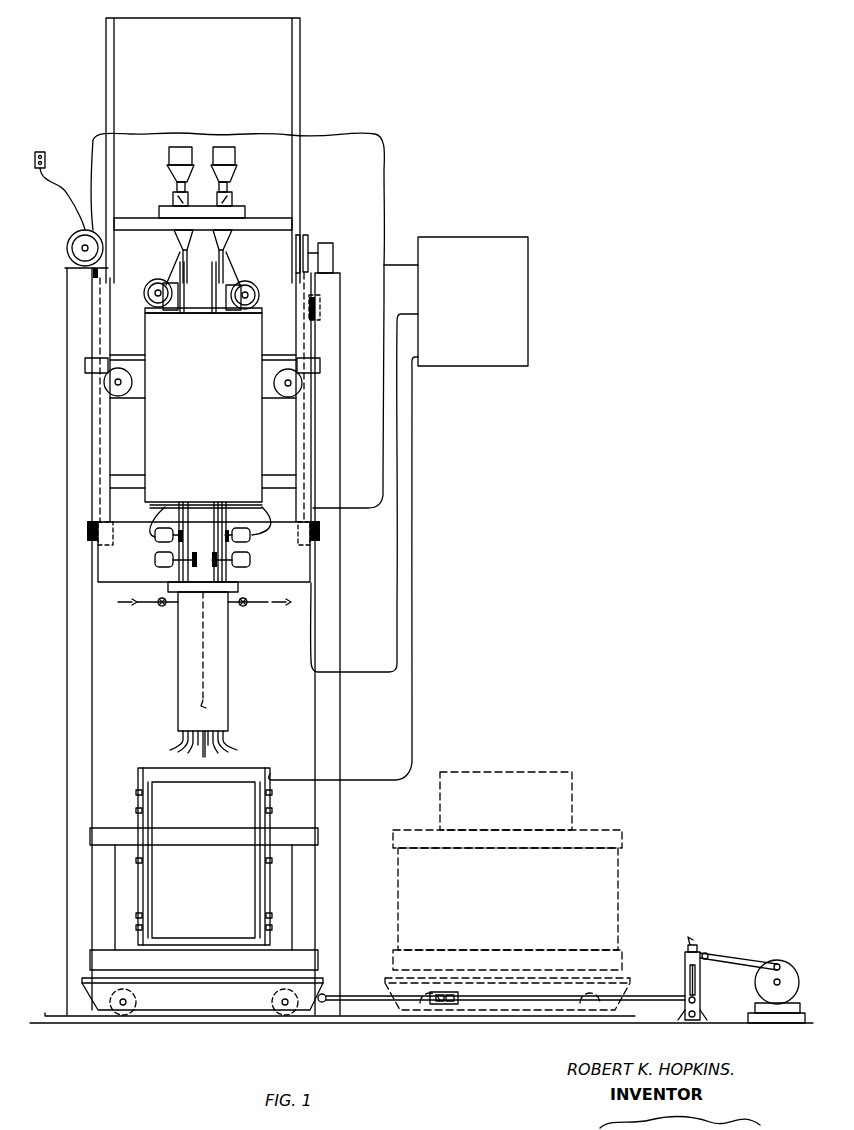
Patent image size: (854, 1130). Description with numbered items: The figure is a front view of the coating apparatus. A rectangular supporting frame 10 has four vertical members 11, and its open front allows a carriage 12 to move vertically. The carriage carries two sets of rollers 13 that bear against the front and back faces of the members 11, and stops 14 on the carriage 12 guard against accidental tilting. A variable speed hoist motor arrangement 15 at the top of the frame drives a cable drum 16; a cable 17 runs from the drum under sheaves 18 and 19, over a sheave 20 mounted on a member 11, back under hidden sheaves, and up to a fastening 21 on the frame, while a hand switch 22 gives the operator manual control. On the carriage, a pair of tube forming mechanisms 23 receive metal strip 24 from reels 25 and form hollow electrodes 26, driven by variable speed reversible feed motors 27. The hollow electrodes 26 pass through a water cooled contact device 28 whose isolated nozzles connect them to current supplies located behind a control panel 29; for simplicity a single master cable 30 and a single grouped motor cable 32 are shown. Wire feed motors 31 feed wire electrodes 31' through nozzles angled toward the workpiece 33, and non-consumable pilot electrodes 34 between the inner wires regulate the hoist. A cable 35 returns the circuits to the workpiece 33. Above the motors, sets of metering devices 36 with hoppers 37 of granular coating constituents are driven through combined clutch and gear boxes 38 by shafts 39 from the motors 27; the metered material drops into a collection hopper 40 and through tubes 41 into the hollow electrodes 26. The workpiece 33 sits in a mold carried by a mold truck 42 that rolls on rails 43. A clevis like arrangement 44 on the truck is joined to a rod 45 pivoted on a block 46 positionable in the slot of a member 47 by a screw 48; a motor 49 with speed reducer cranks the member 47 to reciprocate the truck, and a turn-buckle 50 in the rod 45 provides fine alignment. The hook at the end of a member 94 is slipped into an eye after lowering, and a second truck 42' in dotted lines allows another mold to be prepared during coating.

The supporting frame 10 is at (346, 658).
The vertical members 11 is at (77, 657).
The carriage 12 is at (100, 458).
The rollers 13 is at (322, 307).
The stops 14 is at (85, 364).
The hoist motor arrangement 15 is at (74, 234).
The cable drum 16 is at (82, 249).
The cable 17 is at (95, 283).
The sheave 18 is at (105, 386).
The sheave 19 is at (300, 391).
The sheave 20 is at (310, 245).
The cable fastening point 21 is at (92, 270).
The hand switch 22 is at (42, 151).
The tube forming mechanisms 23 is at (152, 332).
The metal strip 24 is at (202, 436).
The reels 25 is at (198, 287).
The hollow electrodes 26 is at (165, 507).
The feed motors 27 is at (152, 285).
The contact device 28 is at (178, 657).
The control panel 29 is at (528, 293).
The master cable 30 is at (380, 683).
The wire feed motors 31 is at (206, 547).
The wire electrodes 31' is at (214, 651).
The cable 32 is at (388, 264).
The workpiece 33 is at (250, 898).
The pilot electrodes 34 is at (204, 752).
The cable 35 is at (413, 749).
The metering devices 36 is at (177, 186).
The hoppers 37 is at (168, 170).
The combined clutch and gear box 38 is at (173, 200).
The shaft 39 is at (166, 262).
The collection hopper 40 is at (176, 236).
The tubes 41 is at (183, 258).
The mold truck 42 is at (230, 899).
The mold truck 42' is at (531, 891).
The rails 43 is at (364, 1018).
The clevis like arrangement 44 is at (328, 996).
The rod 45 is at (380, 1005).
The block 46 is at (688, 1004).
The member 47 is at (702, 992).
The screw 48 is at (690, 976).
The motor 49 is at (757, 1006).
The turn-buckle 50 is at (445, 1005).
The member 94 is at (212, 651).